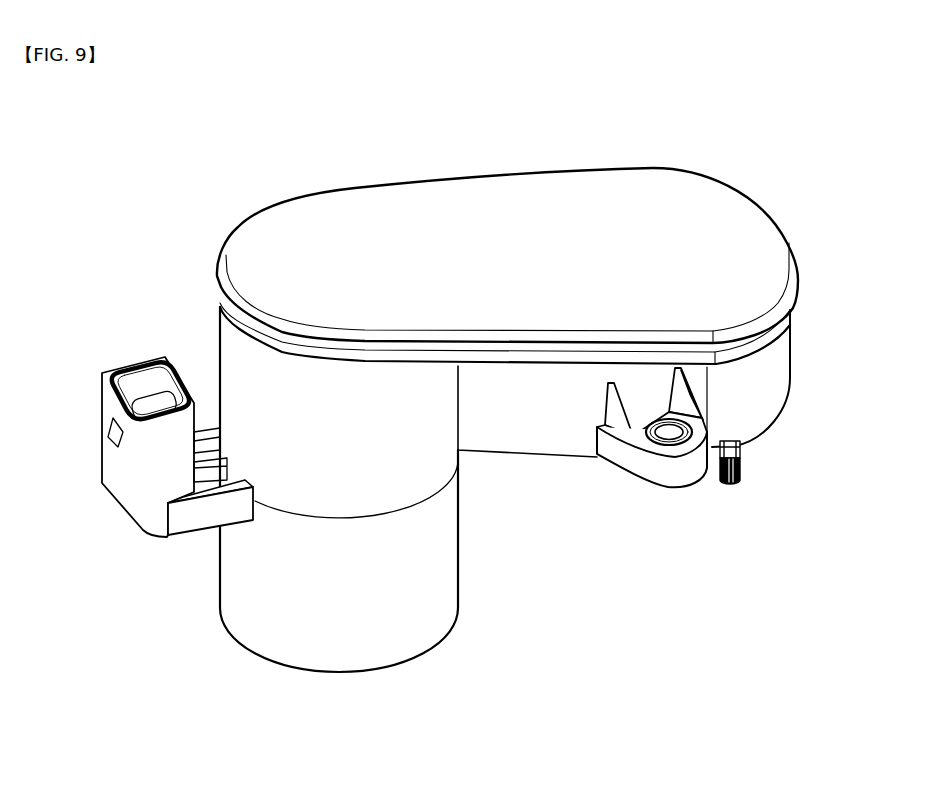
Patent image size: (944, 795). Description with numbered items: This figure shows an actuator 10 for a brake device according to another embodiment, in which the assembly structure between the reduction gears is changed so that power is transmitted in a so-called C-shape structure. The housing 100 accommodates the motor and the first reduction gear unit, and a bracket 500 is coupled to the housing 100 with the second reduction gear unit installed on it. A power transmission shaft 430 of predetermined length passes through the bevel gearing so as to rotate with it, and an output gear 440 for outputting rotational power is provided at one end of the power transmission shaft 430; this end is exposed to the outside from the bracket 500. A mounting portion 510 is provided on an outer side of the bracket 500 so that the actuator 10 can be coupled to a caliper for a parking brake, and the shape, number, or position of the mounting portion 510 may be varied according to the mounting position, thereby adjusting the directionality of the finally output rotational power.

The actuator for a brake device 10 is at (505, 407).
The housing 100 is at (487, 550).
The power transmission shaft 430 is at (738, 444).
The output gear 440 is at (742, 469).
The bracket 500 is at (762, 176).
The mounting portion 510 is at (667, 473).